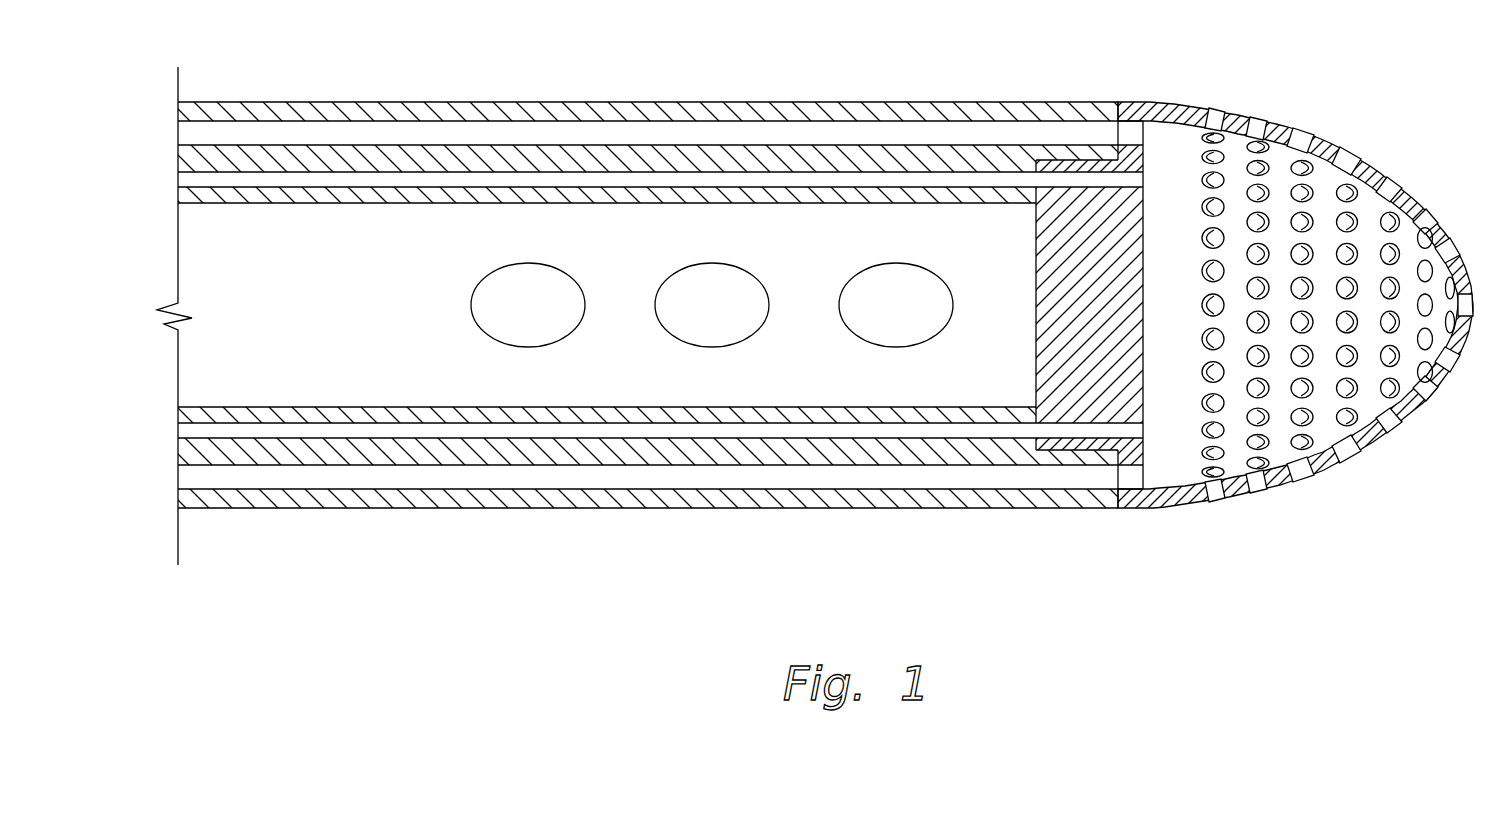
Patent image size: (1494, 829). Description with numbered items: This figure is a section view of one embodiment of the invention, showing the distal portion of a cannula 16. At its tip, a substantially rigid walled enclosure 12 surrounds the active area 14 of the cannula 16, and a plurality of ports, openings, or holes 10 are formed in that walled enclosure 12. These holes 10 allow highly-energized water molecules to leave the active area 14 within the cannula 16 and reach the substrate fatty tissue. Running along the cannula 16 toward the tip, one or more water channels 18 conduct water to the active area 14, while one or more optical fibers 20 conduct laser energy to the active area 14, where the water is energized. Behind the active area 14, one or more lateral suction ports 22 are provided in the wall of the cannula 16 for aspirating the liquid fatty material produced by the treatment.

The holes 10 is at (1221, 112).
The walled enclosure 12 is at (1392, 164).
The active area 14 is at (1273, 165).
The cannula 16 is at (1107, 22).
The water channels 18 is at (309, 133).
The optical fibers 20 is at (352, 181).
The lateral suction ports 22 is at (543, 263).